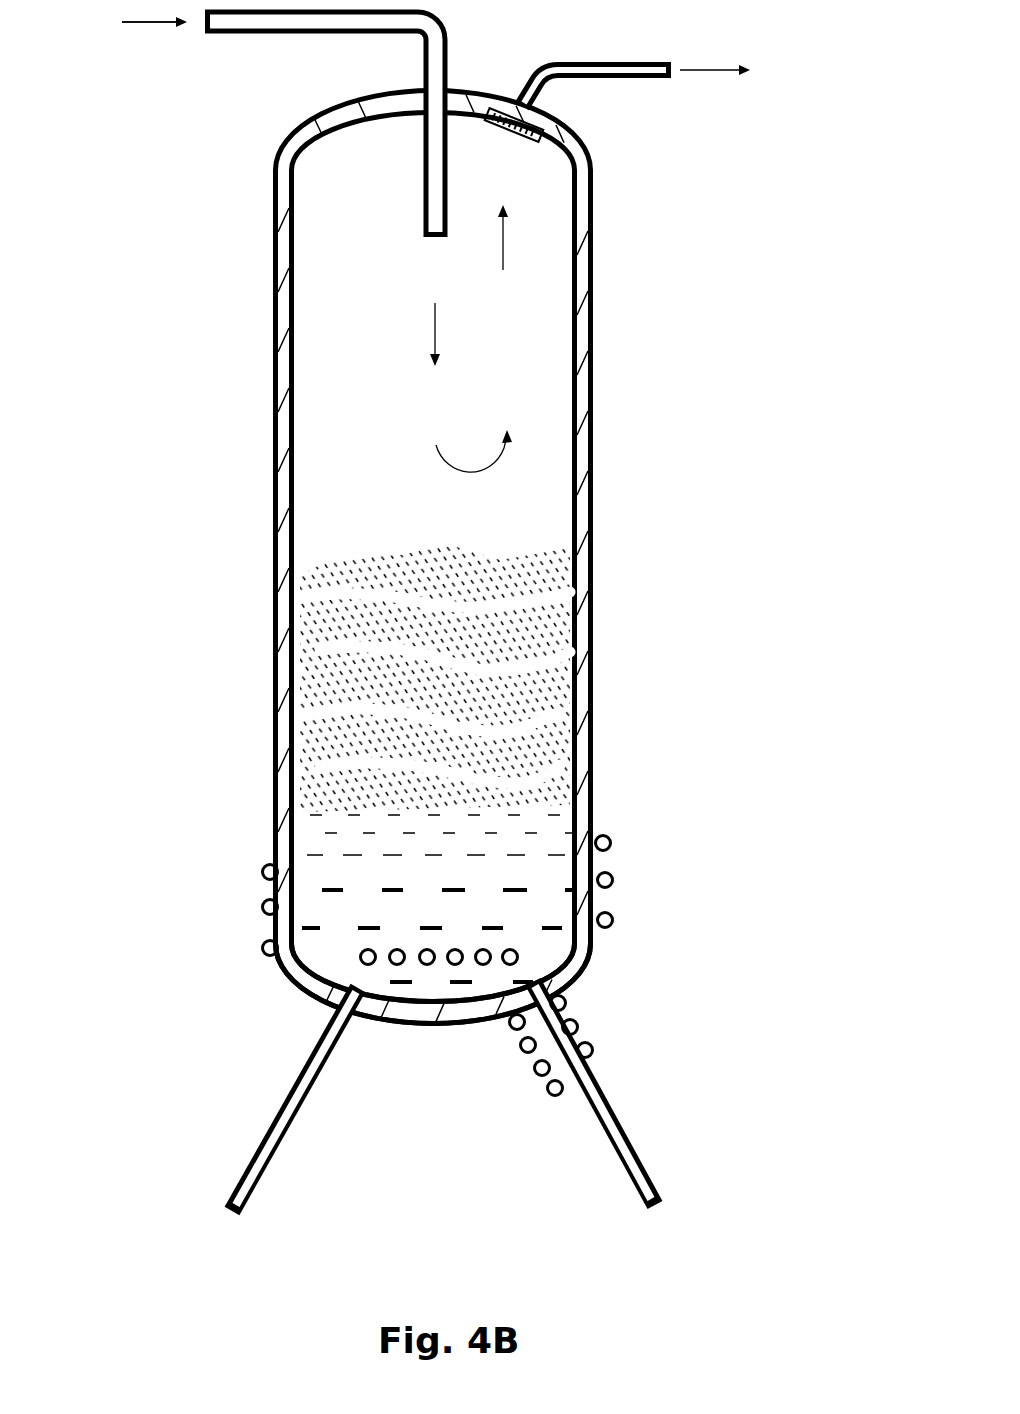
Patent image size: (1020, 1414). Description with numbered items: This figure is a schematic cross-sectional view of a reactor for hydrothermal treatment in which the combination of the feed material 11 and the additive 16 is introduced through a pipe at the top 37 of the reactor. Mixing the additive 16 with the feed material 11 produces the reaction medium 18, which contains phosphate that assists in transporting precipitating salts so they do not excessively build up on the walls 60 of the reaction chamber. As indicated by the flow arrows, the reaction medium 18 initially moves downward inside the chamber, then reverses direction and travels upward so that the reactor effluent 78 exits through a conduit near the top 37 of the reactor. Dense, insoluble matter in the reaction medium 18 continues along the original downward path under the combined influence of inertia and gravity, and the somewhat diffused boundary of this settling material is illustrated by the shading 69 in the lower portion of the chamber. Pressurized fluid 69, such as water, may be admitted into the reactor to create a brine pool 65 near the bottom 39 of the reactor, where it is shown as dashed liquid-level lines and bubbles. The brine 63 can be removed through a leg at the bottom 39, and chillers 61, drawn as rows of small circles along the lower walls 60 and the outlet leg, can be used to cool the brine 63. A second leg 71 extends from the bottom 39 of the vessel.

The feed material 11 is at (137, 22).
The additive 16 is at (117, 52).
The reaction medium 18 is at (503, 233).
The top 37 is at (472, 88).
The bottom 39 is at (302, 987).
The walls 60 is at (588, 530).
The chillers 61 is at (613, 919).
The brine 63 is at (666, 1229).
The brine pool 65 is at (533, 830).
The shading 69 is at (548, 672).
The outlet leg 71 is at (226, 1221).
The reactor effluent 78 is at (703, 70).